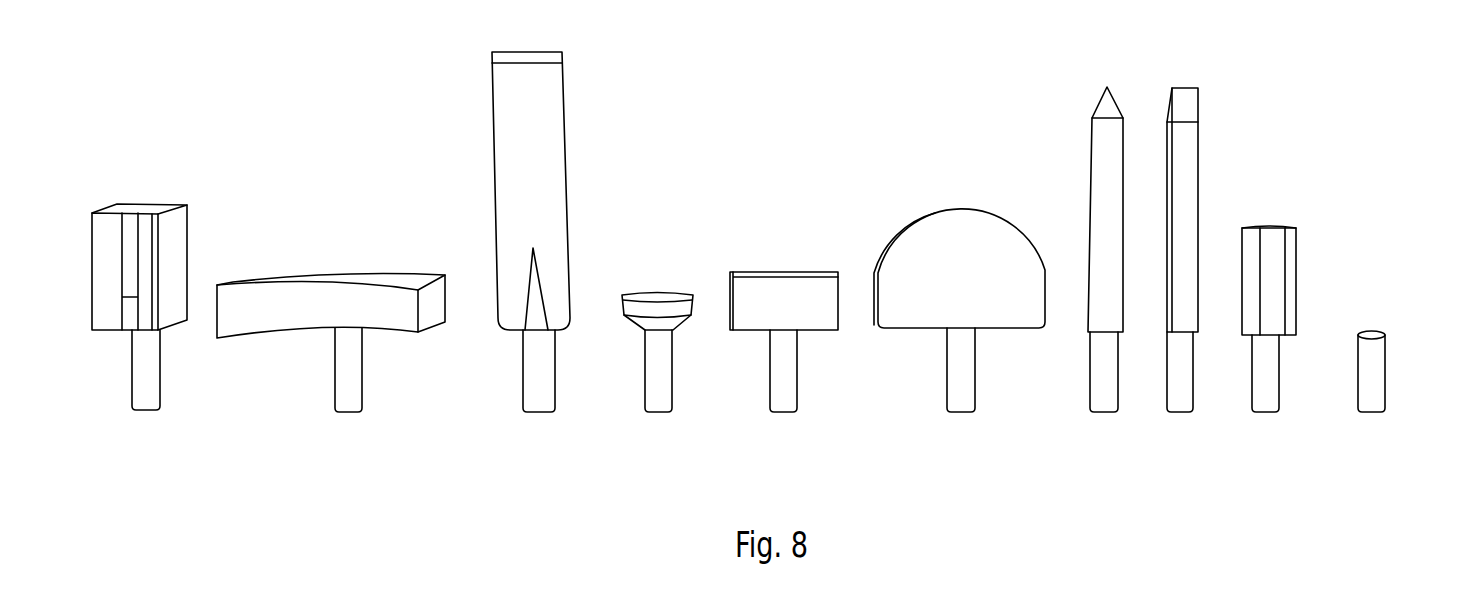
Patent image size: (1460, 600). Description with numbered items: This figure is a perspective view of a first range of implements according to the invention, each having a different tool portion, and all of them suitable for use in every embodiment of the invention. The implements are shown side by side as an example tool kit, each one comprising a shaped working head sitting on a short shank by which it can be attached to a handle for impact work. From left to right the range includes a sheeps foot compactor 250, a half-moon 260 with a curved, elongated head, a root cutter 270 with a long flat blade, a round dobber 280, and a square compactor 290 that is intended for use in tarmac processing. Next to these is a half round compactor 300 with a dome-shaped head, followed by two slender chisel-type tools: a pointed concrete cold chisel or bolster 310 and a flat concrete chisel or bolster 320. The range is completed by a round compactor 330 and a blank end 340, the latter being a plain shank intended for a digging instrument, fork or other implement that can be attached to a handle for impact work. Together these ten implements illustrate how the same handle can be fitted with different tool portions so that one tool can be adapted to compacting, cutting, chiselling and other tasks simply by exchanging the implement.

The sheeps foot compactor 250 is at (170, 407).
The half-moon 260 is at (372, 405).
The root cutter 270 is at (563, 407).
The round dobber 280 is at (682, 407).
The square compactor 290 is at (807, 407).
The half round compactor 300 is at (985, 405).
The pointed concrete cold chisel or bolster 310 is at (1130, 405).
The flat concrete chisel or bolster 320 is at (1203, 405).
The round compactor 330 is at (1290, 403).
The blank end 340 is at (1395, 403).